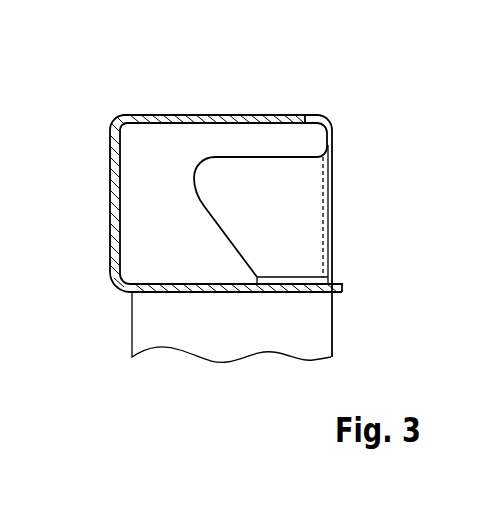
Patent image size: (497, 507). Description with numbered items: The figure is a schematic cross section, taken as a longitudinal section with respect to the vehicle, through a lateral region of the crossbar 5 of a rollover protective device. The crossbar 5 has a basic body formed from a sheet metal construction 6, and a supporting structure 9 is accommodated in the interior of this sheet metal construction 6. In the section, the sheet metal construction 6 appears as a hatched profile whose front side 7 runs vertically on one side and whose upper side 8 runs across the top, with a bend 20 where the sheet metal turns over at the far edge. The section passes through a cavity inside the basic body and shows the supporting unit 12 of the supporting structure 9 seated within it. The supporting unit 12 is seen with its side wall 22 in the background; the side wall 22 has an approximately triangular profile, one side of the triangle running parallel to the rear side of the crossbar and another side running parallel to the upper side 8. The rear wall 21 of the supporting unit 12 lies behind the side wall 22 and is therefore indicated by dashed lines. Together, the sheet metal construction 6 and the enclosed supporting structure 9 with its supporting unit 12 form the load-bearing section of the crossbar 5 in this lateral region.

The crossbar 5 is at (106, 97).
The sheet metal construction 6 is at (118, 213).
The front side 7 is at (110, 166).
The upper side 8 is at (206, 114).
The supporting structure 9 is at (362, 208).
The supporting unit 12 is at (331, 183).
The bend 20 is at (322, 113).
The rear wall 21 is at (324, 238).
The side wall 22 is at (295, 247).